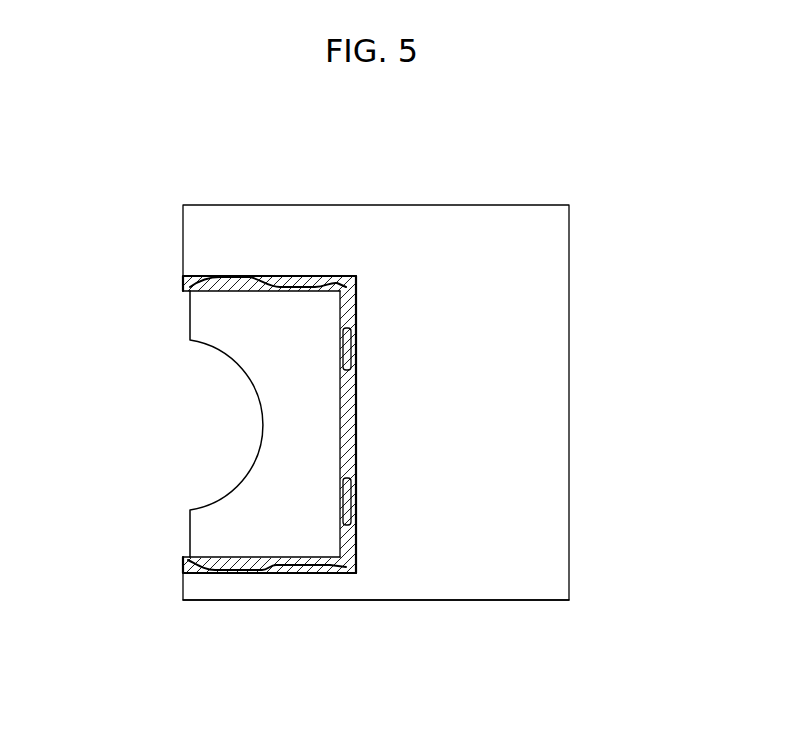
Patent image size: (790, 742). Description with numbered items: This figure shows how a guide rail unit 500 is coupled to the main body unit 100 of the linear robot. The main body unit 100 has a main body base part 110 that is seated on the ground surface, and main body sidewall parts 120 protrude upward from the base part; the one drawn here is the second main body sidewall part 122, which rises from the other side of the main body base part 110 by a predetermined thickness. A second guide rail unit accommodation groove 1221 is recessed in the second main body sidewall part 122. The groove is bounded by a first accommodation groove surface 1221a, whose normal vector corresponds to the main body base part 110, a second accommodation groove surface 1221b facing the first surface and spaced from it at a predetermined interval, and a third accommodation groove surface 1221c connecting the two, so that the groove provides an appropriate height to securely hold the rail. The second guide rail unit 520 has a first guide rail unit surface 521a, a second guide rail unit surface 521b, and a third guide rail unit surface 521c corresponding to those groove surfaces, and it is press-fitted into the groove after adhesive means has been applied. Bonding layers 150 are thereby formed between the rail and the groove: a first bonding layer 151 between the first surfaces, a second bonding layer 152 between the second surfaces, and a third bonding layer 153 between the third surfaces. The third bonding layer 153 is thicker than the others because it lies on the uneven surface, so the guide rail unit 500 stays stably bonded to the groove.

The main body unit 100 is at (513, 621).
The main body base part 110 is at (423, 580).
The main body sidewall part 120 is at (550, 353).
The second main body sidewall part 122 is at (376, 402).
The bonding layer 150 is at (271, 408).
The first bonding layer 151 is at (237, 573).
The second bonding layer 152 is at (292, 278).
The third bonding layer 153 is at (333, 573).
The guide rail unit 500 is at (174, 515).
The second guide rail unit 520 is at (370, 357).
The first guide rail unit surface 521a is at (198, 538).
The second guide rail unit surface 521b is at (326, 305).
The third guide rail unit surface 521c is at (343, 461).
The second guide rail unit accommodation groove 1221 is at (169, 277).
The first accommodation groove surface 1221a is at (197, 573).
The second accommodation groove surface 1221b is at (250, 278).
The third accommodation groove surface 1221c is at (353, 416).